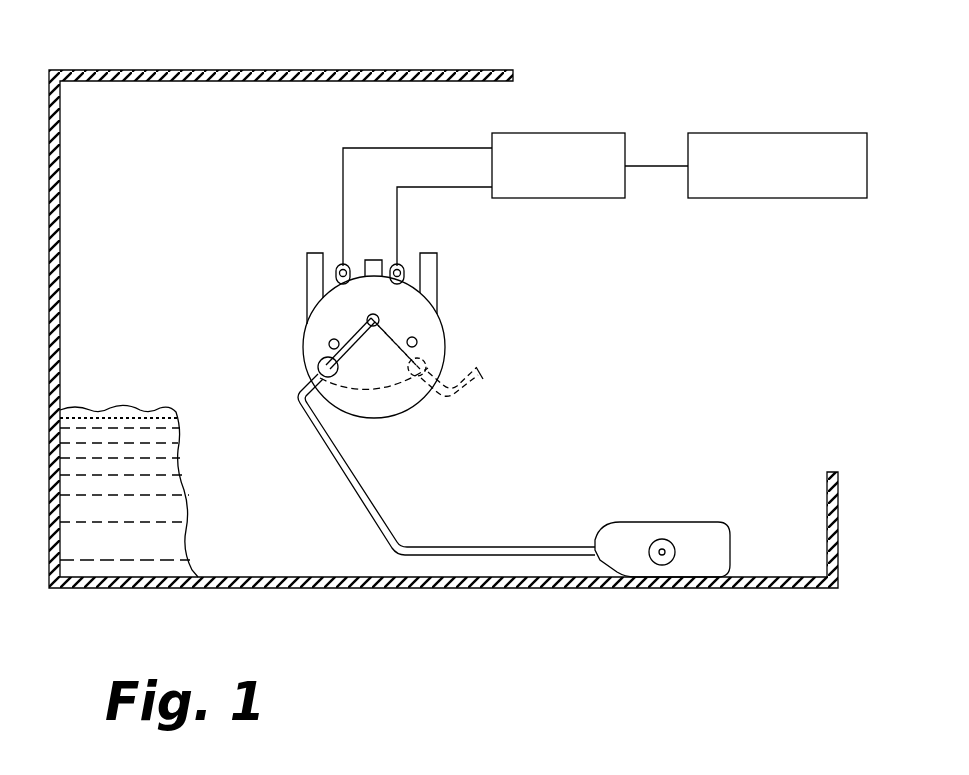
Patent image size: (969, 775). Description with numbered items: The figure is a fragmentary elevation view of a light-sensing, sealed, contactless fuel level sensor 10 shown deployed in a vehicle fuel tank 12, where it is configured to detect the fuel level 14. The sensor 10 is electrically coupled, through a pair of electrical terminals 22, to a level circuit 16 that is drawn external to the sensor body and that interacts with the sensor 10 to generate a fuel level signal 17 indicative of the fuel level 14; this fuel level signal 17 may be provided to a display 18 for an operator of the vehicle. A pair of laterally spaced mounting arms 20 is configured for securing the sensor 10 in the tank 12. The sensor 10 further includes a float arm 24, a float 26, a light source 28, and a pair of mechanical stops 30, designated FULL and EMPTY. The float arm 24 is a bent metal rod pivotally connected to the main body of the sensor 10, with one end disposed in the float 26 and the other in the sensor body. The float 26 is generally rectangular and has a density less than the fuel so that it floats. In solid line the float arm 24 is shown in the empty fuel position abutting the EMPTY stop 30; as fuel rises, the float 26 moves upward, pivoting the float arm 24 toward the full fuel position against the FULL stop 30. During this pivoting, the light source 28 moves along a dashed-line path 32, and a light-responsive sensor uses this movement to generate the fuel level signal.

The fuel level sensor 10 is at (474, 287).
The fuel tank 12 is at (413, 70).
The fuel level 14 is at (98, 412).
The level circuit 16 is at (553, 133).
The fuel level signal 17 is at (657, 166).
The display 18 is at (778, 133).
The mounting arms 20 is at (307, 263).
The electrical terminals 22 is at (338, 266).
The float arm 24 is at (480, 548).
The float 26 is at (662, 522).
The light source 28 is at (320, 362).
The mechanical stops 30 is at (513, 312).
The path 32 is at (375, 390).